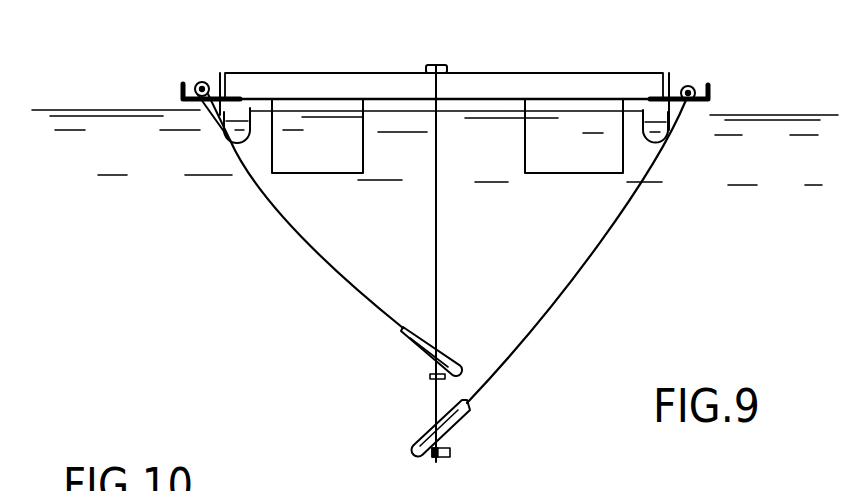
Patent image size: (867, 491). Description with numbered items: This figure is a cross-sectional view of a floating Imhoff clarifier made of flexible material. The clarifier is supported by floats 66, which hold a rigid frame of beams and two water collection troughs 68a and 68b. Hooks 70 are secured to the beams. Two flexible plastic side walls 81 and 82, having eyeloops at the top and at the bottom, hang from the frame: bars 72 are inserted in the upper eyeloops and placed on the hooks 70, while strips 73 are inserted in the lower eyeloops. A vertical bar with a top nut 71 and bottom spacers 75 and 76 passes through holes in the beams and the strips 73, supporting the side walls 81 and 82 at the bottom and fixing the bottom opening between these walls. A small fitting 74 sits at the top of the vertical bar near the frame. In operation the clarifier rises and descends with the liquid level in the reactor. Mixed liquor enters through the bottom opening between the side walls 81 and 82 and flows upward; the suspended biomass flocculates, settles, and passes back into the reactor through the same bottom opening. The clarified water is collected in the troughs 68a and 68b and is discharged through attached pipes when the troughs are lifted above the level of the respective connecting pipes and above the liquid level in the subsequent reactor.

The float 66 is at (353, 159).
The water collection trough 68a is at (238, 115).
The water collection trough 68b is at (620, 79).
The hook 70 is at (183, 90).
The top nut 71 is at (438, 250).
The bar 72 is at (201, 82).
The strip 73 is at (450, 358).
The cleat 74 is at (441, 64).
The bottom spacer 75 is at (432, 376).
The bottom spacer 76 is at (450, 458).
The flexible plastic side wall 81 is at (343, 277).
The flexible plastic side wall 82 is at (552, 315).